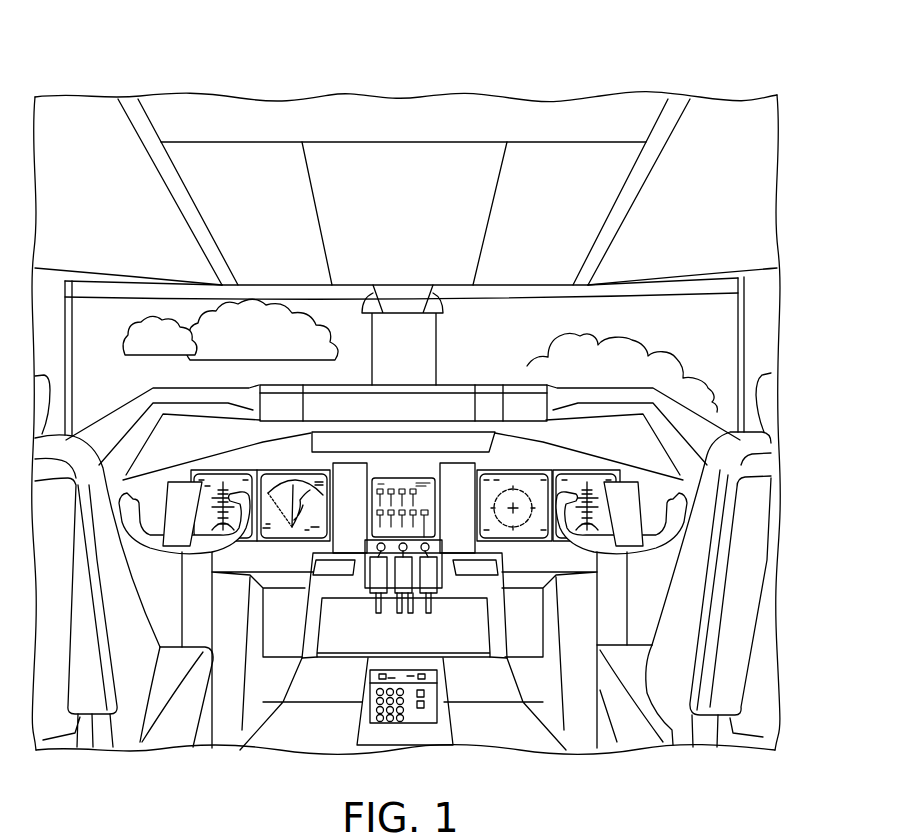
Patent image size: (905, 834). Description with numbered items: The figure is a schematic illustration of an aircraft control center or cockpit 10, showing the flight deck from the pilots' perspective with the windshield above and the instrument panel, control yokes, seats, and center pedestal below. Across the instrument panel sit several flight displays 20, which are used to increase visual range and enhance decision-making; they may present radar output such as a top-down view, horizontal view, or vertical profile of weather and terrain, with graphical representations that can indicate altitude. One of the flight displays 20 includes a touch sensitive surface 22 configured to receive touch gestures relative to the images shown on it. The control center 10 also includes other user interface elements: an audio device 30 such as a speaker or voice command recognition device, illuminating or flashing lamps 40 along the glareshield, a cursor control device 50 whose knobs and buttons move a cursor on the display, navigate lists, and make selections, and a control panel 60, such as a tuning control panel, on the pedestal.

The aircraft control center 10 is at (727, 79).
The flight displays 20 is at (405, 482).
The touch sensitive surface 22 is at (281, 493).
The audio device 30 is at (473, 567).
The illuminating or flashing lamps 40 is at (492, 403).
The cursor control device 50 is at (432, 678).
The control panel 60 is at (429, 725).